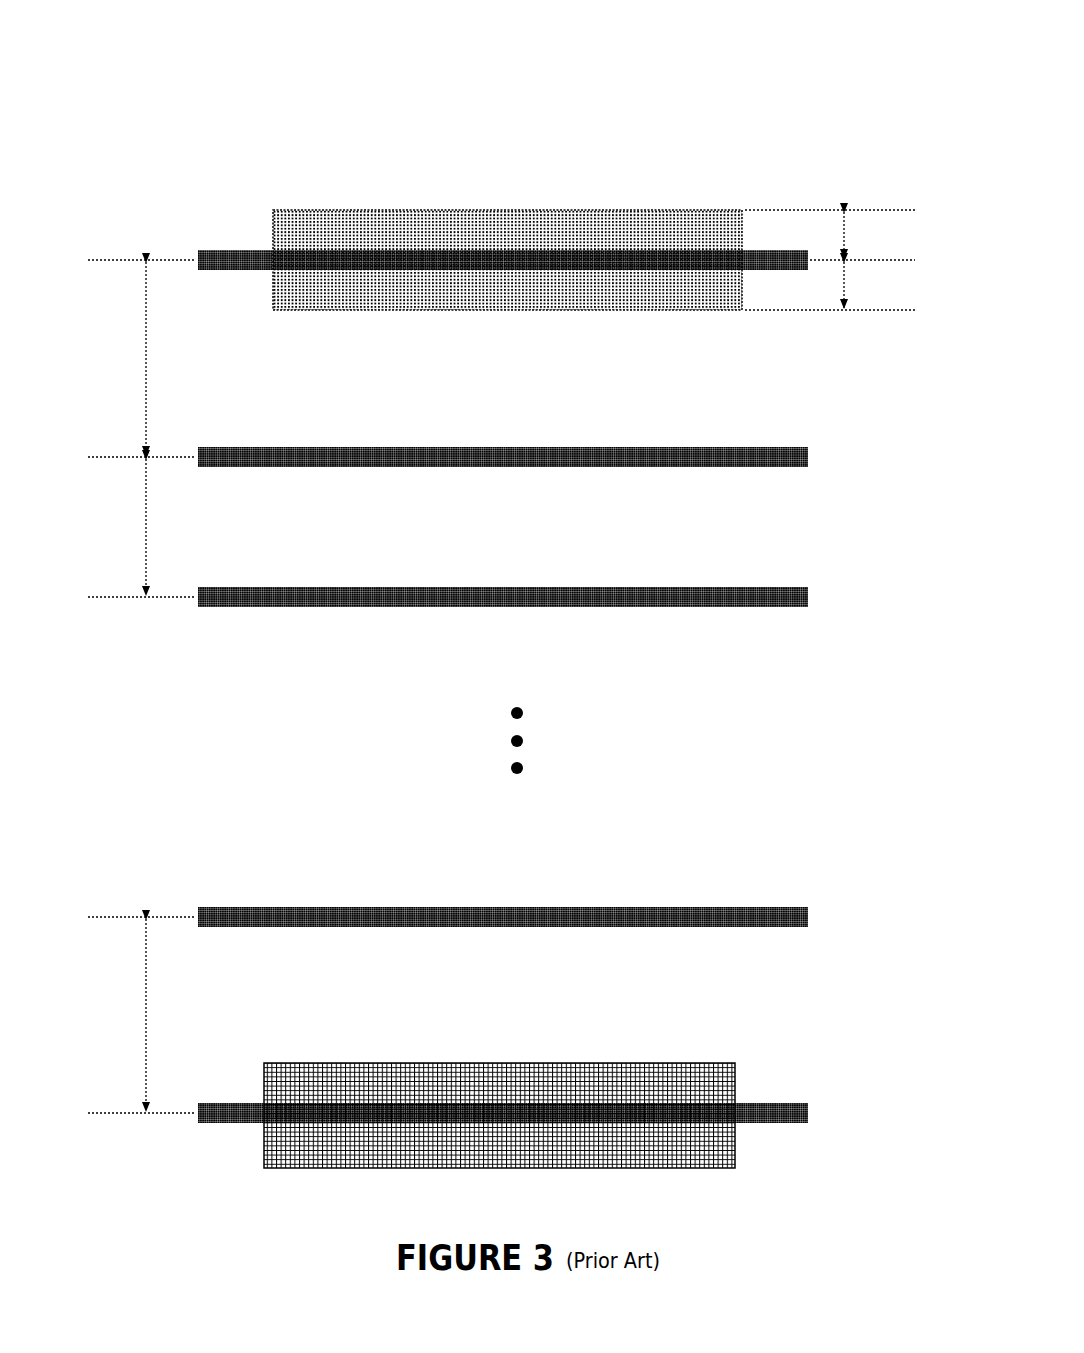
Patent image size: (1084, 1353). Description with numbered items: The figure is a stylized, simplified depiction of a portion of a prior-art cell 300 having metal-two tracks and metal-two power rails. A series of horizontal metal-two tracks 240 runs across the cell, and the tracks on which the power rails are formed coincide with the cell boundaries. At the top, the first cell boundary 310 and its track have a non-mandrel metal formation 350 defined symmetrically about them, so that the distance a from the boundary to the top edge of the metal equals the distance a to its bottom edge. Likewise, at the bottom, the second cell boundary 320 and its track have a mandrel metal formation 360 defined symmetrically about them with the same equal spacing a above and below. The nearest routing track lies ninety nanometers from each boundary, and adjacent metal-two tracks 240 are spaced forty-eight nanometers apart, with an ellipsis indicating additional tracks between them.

The cell 300 is at (252, 22).
The first cell boundary 310 is at (215, 248).
The second cell boundary 320 is at (215, 1103).
The M2 tracks 240 is at (453, 917).
The non-mandrel metal M2 formation 350 is at (471, 235).
The mandrel metal M2 formation 360 is at (692, 1080).